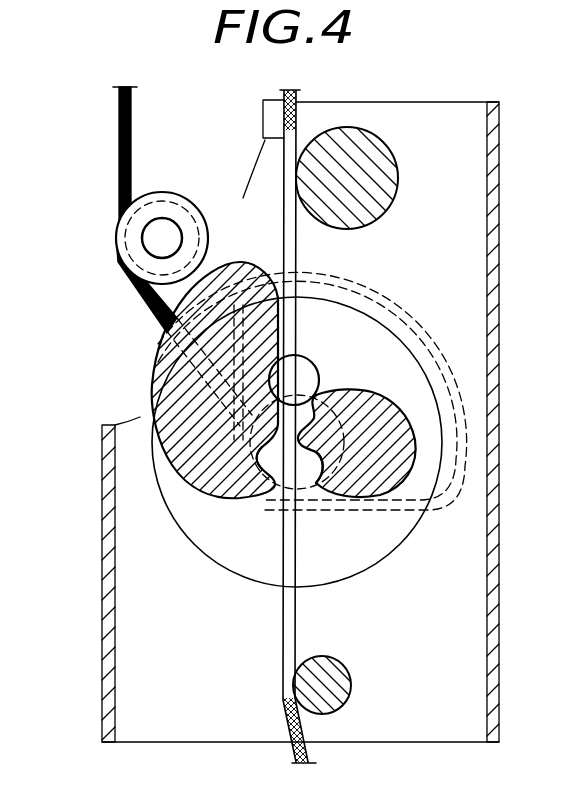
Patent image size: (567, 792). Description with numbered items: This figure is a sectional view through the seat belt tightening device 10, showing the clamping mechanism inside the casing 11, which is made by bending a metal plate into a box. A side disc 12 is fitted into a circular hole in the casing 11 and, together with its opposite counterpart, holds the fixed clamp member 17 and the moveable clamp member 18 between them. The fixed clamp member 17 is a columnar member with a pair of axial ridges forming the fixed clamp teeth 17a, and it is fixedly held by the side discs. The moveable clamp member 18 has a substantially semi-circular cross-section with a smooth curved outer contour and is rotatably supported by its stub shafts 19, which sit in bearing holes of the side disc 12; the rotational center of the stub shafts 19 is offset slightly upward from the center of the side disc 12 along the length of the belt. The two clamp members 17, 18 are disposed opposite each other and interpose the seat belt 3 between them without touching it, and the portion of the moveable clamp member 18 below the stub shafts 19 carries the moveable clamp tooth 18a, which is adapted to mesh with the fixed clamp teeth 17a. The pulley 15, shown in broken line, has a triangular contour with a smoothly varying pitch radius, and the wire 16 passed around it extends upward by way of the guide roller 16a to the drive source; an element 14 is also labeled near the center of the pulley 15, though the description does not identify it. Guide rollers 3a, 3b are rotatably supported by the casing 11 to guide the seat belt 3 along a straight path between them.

The seat belt 3 is at (263, 138).
The guide roller 3a is at (396, 191).
The guide roller 3b is at (349, 670).
The seat belt tightening device 10 is at (430, 93).
The casing 11 is at (499, 198).
The side disc 12 is at (383, 548).
The shaft 14 is at (300, 489).
The pulley 15 is at (450, 371).
The wire 16 is at (128, 106).
The guide roller 16a is at (207, 226).
The fixed clamp member 17 is at (368, 392).
The fixed clamp teeth 17a is at (318, 484).
The moveable clamp member 18 is at (155, 366).
The moveable clamp tooth 18a is at (268, 488).
The stub shafts 19 is at (312, 382).